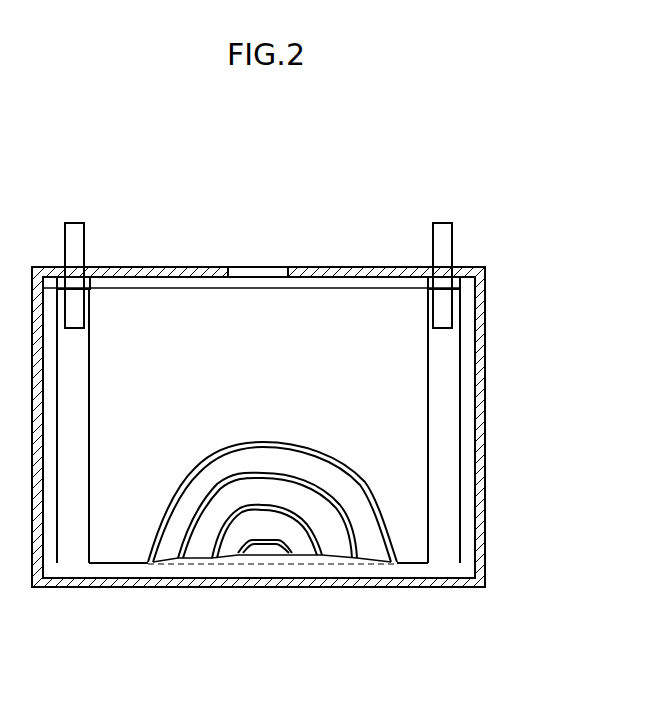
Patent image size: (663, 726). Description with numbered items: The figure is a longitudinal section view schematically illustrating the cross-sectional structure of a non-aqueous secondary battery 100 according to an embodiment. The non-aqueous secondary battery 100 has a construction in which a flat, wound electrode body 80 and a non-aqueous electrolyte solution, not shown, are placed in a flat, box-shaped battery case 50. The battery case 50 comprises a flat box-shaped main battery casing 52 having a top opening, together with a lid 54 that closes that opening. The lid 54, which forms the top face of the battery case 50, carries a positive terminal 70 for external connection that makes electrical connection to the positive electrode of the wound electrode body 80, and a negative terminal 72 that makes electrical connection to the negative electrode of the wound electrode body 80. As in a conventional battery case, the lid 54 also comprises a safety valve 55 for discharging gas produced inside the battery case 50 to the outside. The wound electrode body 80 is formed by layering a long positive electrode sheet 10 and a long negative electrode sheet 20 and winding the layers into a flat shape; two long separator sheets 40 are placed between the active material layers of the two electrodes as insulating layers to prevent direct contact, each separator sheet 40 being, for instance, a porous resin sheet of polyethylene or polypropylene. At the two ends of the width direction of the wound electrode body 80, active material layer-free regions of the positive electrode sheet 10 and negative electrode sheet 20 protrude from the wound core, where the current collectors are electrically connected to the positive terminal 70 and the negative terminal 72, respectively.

The non-aqueous secondary battery 100 is at (486, 154).
The positive electrode sheet 10 is at (166, 549).
The negative electrode sheet 20 is at (230, 543).
The separator sheet 40 is at (117, 546).
The battery case 50 is at (494, 429).
The main battery casing 52 is at (483, 545).
The lid 54 is at (367, 273).
The safety valve 55 is at (252, 272).
The positive terminal 70 is at (74, 237).
The negative terminal 72 is at (442, 237).
The wound electrode body 80 is at (415, 573).